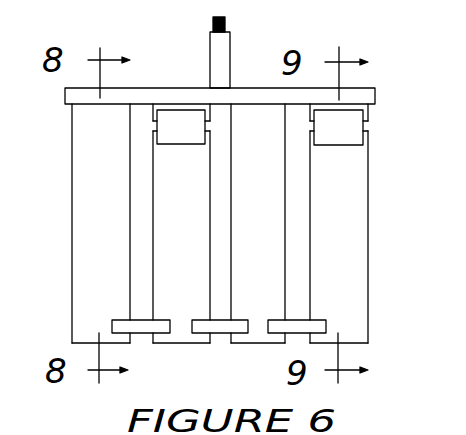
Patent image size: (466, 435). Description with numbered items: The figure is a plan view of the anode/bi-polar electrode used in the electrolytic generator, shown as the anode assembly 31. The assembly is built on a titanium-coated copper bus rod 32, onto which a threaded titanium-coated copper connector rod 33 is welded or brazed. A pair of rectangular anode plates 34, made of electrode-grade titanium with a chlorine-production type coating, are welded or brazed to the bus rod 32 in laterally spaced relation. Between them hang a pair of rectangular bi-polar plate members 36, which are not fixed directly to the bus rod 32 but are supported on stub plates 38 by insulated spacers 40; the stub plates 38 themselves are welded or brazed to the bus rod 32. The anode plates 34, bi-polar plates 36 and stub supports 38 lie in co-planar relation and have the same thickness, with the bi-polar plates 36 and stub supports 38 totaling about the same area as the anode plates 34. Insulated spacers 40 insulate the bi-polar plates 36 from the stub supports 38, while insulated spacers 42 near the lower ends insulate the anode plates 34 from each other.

The anode assembly 31 is at (179, 34).
The bus rod 32 is at (375, 95).
The connector rod 33 is at (230, 50).
The anode plate 34 is at (72, 152).
The bi-polar plate member 36 is at (183, 344).
The stub plate 38 is at (153, 116).
The insulated spacer 40 is at (167, 125).
The insulated spacer 42 is at (137, 327).